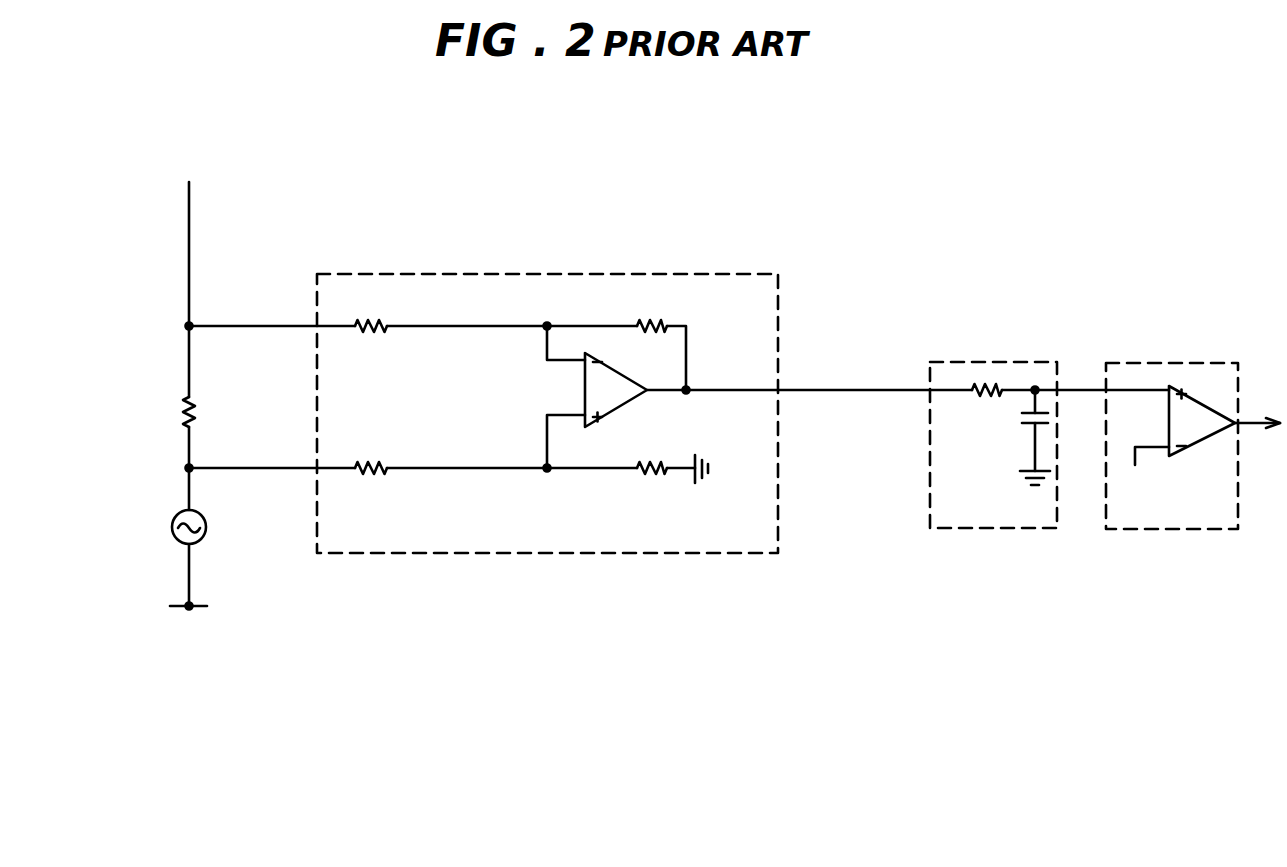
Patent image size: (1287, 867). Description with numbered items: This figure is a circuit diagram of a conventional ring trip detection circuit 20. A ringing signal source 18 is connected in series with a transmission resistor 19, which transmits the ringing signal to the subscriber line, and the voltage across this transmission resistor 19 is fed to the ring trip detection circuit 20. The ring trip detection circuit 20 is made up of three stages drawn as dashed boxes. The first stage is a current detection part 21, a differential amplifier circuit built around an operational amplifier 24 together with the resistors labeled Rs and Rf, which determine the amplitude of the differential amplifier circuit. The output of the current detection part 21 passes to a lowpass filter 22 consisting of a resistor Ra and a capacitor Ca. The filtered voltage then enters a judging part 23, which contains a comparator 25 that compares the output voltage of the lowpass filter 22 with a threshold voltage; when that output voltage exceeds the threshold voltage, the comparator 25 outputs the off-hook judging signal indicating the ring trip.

The ringing signal source 18 is at (171, 525).
The transmission resistor 19 is at (172, 408).
The ring trip detection circuit 20 is at (845, 210).
The current detection part 21 is at (547, 379).
The lowpass filter 22 is at (960, 358).
The judging part 23 is at (1193, 409).
The operational amplifier 24 is at (572, 385).
The comparator 25 is at (1197, 440).